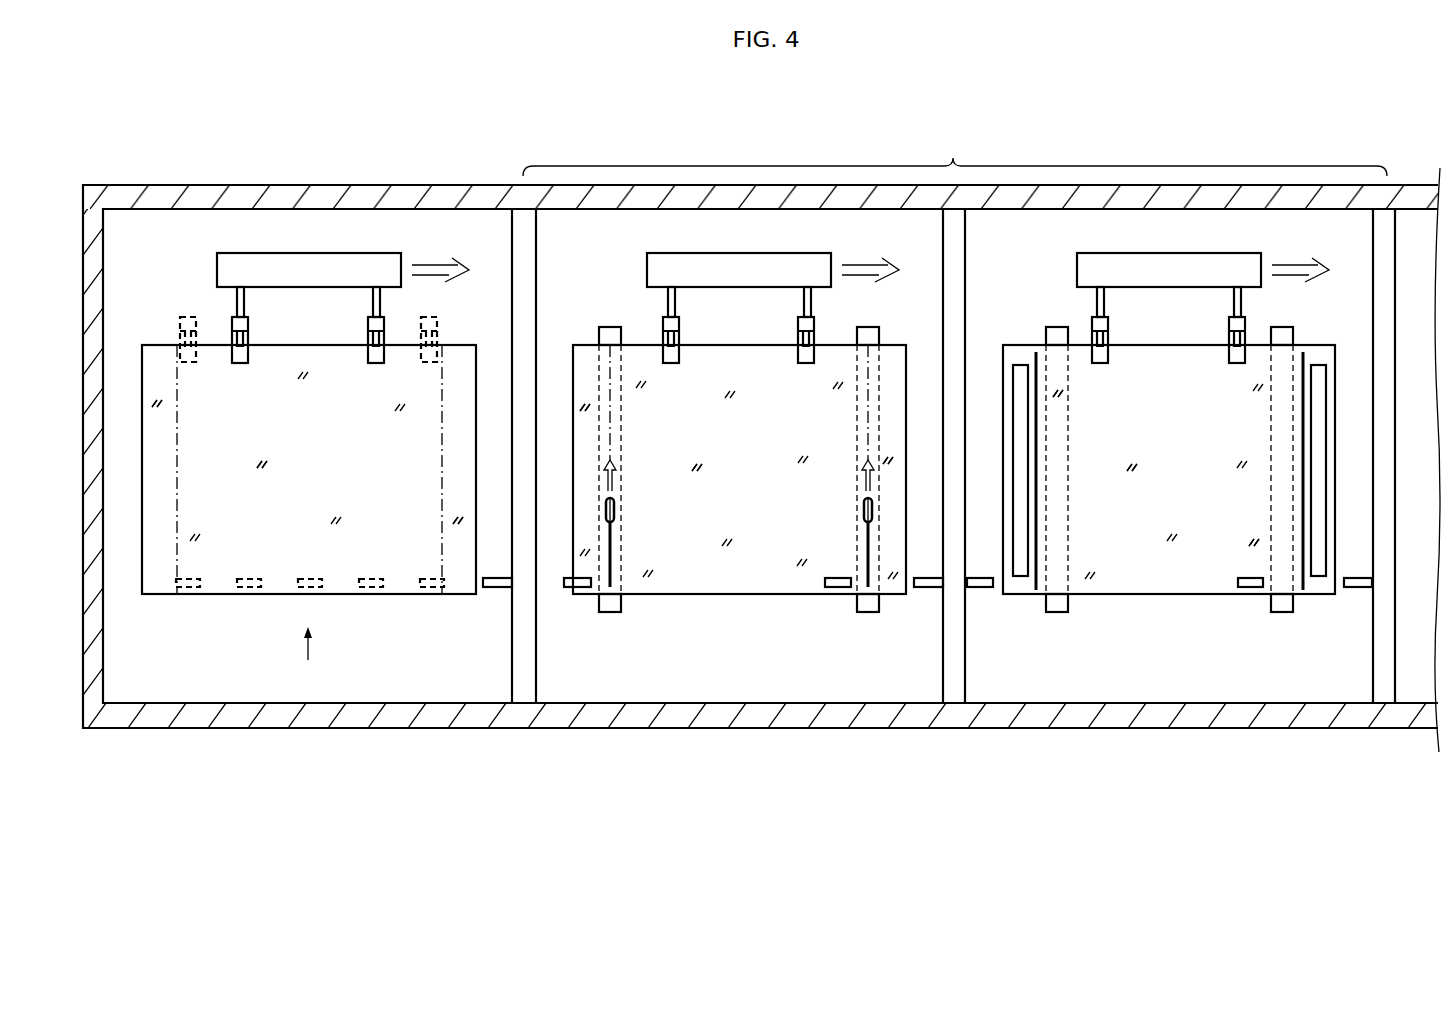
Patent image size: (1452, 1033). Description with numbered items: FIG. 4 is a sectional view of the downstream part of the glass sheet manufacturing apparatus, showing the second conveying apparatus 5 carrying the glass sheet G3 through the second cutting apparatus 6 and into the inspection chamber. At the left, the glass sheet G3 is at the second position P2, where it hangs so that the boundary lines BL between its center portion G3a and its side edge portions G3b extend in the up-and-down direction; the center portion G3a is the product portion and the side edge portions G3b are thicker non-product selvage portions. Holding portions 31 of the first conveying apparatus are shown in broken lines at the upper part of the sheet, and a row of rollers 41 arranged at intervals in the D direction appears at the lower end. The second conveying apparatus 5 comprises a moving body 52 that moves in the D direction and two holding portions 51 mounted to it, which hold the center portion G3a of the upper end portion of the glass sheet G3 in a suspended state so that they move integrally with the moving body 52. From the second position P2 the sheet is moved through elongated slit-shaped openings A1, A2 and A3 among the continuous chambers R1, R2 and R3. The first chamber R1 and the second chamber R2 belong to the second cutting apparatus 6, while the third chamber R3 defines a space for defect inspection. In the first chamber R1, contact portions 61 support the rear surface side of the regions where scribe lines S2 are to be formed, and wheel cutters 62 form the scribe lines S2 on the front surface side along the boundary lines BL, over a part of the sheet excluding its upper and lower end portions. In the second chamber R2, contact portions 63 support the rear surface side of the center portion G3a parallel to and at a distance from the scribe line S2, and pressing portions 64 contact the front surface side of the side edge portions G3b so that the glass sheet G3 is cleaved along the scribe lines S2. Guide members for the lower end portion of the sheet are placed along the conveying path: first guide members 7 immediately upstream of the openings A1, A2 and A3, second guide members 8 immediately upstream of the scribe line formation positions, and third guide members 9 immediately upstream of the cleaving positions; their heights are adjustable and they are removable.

The second conveying apparatus 5 is at (240, 247).
The second cutting apparatus 6 is at (955, 153).
The first guide member 7 is at (498, 589).
The second guide member 8 is at (566, 590).
The third guide member 9 is at (982, 590).
The holding portion 31 is at (180, 325).
The roller 41 is at (189, 589).
The holding portion 51 is at (248, 327).
The moving body 52 is at (311, 262).
The contact portion 61 is at (610, 327).
The wheel cutter 62 is at (615, 507).
The contact portion 63 is at (1058, 327).
The pressing portion 64 is at (1017, 468).
The boundary line BL is at (179, 489).
The scribe line S2 is at (613, 541).
The glass sheet G3 is at (399, 586).
The center portion G3a is at (275, 587).
The side edge portion G3b is at (160, 593).
The second position P2 is at (307, 660).
The D direction D is at (433, 268).
The opening A1 is at (537, 690).
The opening A2 is at (966, 690).
The opening A3 is at (1388, 658).
The first chamber R1 is at (745, 688).
The second chamber R2 is at (1173, 688).
The third chamber R3 is at (1425, 688).